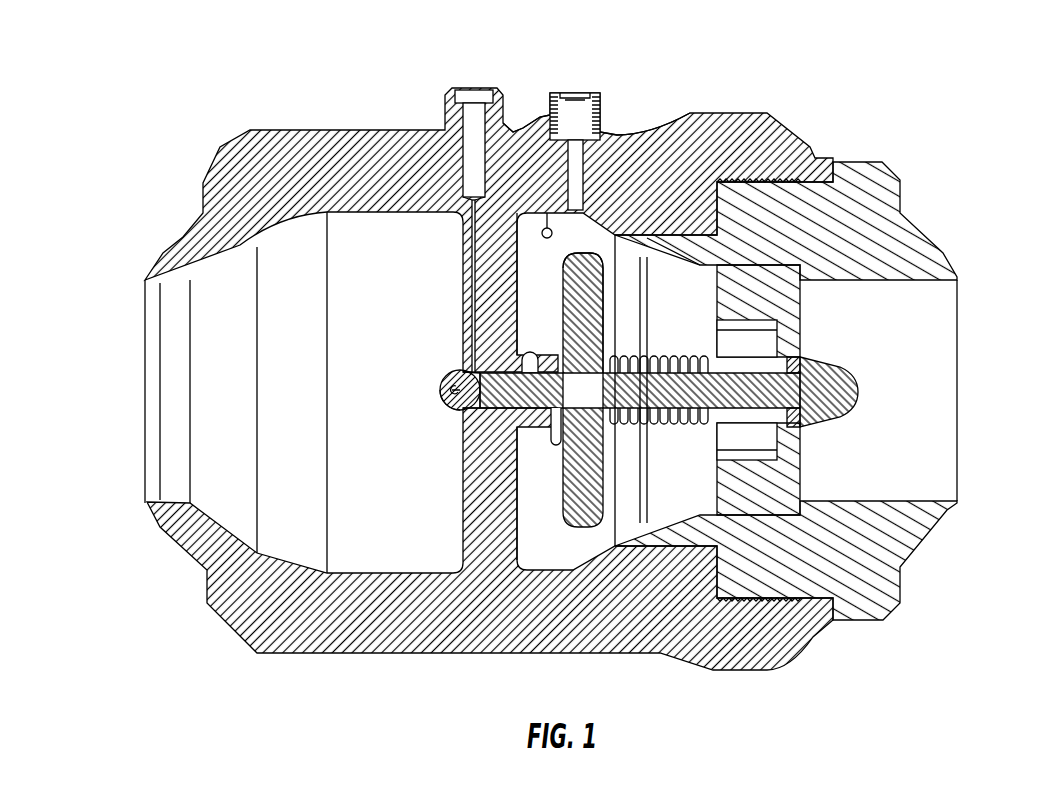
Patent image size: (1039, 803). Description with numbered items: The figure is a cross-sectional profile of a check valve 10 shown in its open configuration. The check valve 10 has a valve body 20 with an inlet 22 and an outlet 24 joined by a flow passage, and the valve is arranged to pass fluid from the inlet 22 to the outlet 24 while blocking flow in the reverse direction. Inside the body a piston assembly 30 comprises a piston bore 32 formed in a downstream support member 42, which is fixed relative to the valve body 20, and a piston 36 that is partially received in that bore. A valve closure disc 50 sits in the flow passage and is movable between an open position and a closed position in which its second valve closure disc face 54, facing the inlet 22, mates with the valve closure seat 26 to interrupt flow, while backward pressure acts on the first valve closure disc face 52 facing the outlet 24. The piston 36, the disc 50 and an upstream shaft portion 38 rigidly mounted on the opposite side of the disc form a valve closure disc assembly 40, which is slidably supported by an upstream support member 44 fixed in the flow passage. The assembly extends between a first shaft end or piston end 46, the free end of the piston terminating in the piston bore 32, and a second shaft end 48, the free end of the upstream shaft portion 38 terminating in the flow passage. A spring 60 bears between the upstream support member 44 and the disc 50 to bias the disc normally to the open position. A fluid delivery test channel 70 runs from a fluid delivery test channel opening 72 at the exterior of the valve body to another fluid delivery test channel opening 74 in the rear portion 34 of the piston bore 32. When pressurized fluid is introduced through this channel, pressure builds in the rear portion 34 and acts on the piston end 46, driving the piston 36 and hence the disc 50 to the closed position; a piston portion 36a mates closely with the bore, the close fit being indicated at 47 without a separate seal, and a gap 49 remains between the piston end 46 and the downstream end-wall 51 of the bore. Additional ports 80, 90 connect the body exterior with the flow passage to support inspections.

The check valve 10 is at (963, 160).
The valve body 20 is at (336, 616).
The inlet 22 is at (962, 370).
The outlet 24 is at (140, 378).
The valve closure seat 26 is at (647, 238).
The piston assembly 30 is at (527, 437).
The piston bore 32 is at (470, 397).
The rear portion of the piston bore 34 is at (450, 400).
The piston 36 is at (534, 403).
The piston portion 36a is at (481, 412).
The upstream shaft portion 38 is at (801, 403).
The valve closure disc assembly 40 is at (618, 342).
The downstream support member 42 is at (501, 486).
The upstream support member 44 is at (751, 473).
The piston end 46 is at (480, 387).
The close fit between piston and piston bore 47 is at (528, 366).
The second shaft end 48 is at (851, 396).
The gap 49 is at (462, 410).
The valve closure disc 50 is at (588, 331).
The downstream end-wall of the bore 51 is at (452, 385).
The first valve closure disc face 52 is at (548, 420).
The second valve closure disc face 54 is at (604, 480).
The spring 60 is at (654, 430).
The fluid delivery test channel 70 is at (477, 293).
The fluid delivery test channel opening 72 is at (478, 97).
The fluid delivery test channel opening 74 is at (480, 370).
The port 80 is at (528, 128).
The port 90 is at (577, 135).